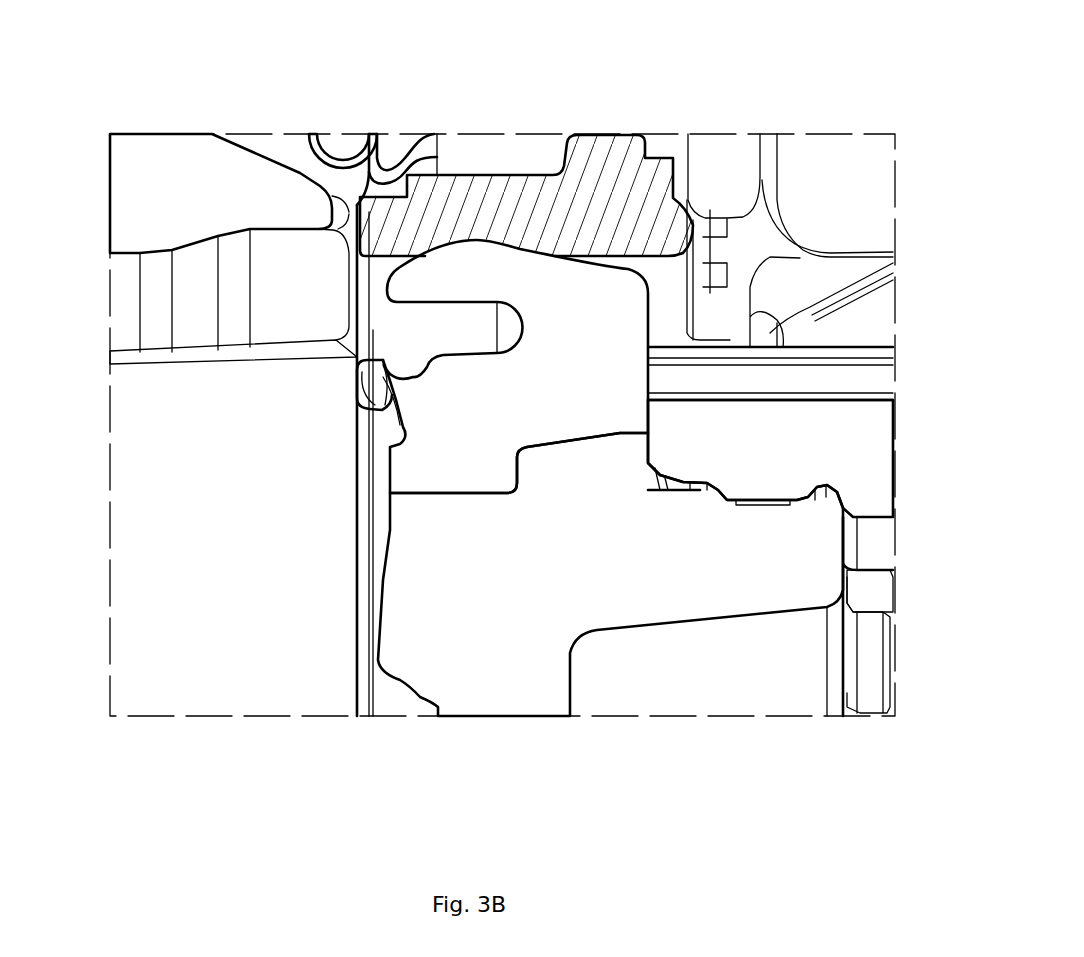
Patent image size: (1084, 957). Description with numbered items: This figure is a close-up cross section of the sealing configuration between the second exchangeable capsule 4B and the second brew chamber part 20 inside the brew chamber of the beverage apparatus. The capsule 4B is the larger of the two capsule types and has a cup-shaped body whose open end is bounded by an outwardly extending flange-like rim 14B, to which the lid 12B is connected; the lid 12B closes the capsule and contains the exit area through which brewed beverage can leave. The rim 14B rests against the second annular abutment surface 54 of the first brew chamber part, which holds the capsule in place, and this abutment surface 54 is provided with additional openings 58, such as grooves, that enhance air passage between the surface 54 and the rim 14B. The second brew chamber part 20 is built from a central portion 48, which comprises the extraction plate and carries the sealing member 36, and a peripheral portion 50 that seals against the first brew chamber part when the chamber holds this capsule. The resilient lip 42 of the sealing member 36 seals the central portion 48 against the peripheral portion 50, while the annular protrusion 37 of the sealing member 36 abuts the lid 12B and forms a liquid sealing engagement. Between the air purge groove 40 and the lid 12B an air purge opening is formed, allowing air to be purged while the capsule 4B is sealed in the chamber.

The second exchangeable capsule 4B is at (240, 657).
The lid 12B is at (357, 360).
The flange-like rim 14B is at (357, 283).
The second brew chamber part 20 is at (787, 547).
The sealing member 36 is at (587, 375).
The annular protrusion 37 is at (357, 408).
The air purge groove 40 is at (357, 392).
The resilient lip 42 is at (492, 277).
The central portion 48 is at (483, 595).
The peripheral portion 50 is at (450, 217).
The second annular abutment surface 54 is at (291, 198).
The additional openings 58 is at (349, 136).